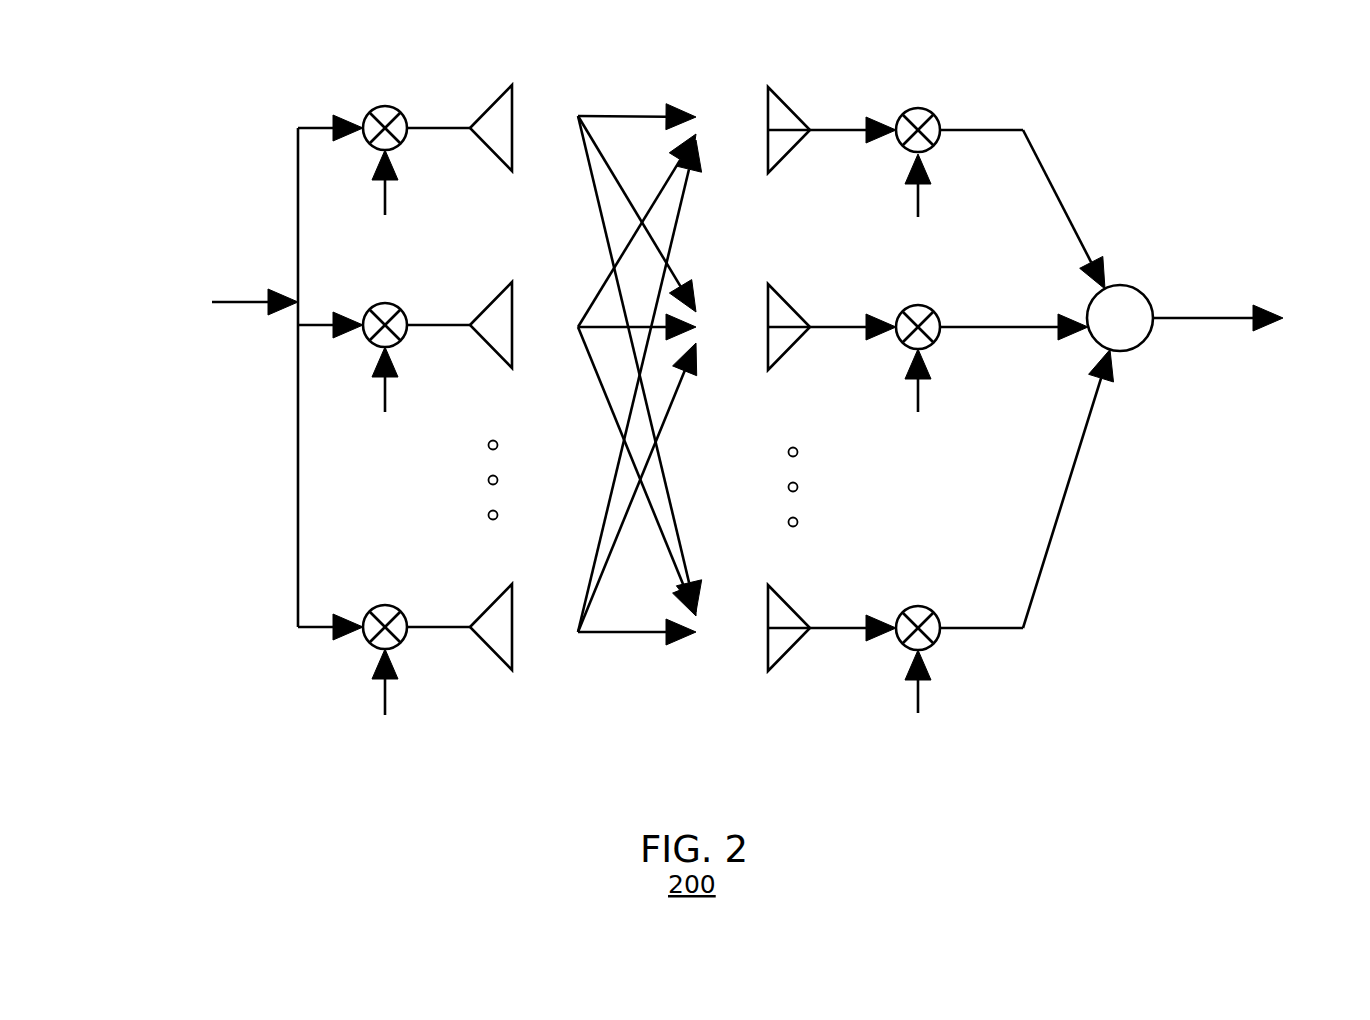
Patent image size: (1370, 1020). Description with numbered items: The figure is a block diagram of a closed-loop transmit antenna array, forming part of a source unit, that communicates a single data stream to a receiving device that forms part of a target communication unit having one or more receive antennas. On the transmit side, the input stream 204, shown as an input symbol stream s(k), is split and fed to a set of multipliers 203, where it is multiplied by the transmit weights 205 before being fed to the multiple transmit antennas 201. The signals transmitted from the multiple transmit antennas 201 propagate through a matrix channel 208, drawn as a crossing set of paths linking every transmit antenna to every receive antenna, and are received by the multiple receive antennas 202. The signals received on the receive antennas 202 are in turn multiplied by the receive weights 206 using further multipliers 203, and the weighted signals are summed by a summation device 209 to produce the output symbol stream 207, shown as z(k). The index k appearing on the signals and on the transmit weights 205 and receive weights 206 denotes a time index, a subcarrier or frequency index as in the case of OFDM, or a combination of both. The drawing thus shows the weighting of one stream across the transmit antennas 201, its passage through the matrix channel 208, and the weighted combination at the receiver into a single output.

The transmit antennas 201 is at (512, 85).
The receive antennas 202 is at (760, 97).
The multipliers 203 is at (362, 118).
The input stream 204 is at (130, 305).
The transmit weights 205 is at (432, 236).
The receive weights 206 is at (965, 225).
The output symbol stream 207 is at (1302, 335).
The matrix channel 208 is at (620, 107).
The summation device 209 is at (1148, 293).